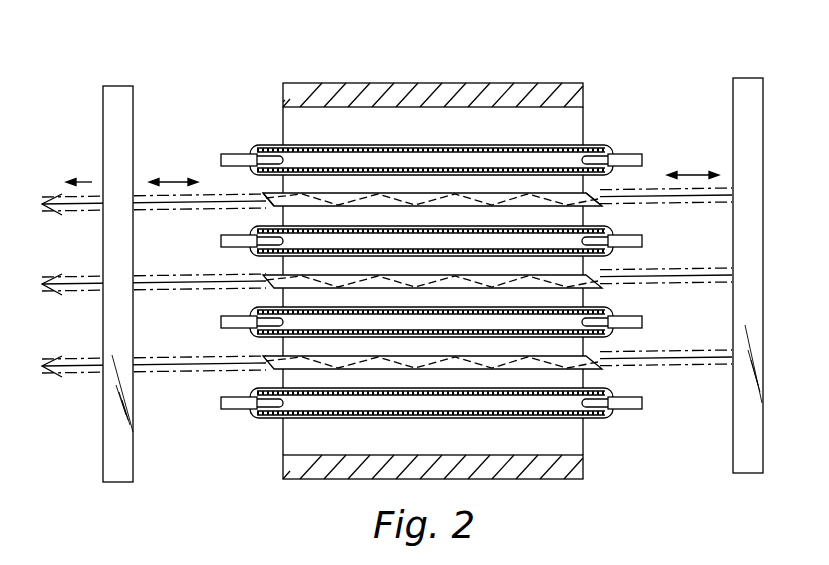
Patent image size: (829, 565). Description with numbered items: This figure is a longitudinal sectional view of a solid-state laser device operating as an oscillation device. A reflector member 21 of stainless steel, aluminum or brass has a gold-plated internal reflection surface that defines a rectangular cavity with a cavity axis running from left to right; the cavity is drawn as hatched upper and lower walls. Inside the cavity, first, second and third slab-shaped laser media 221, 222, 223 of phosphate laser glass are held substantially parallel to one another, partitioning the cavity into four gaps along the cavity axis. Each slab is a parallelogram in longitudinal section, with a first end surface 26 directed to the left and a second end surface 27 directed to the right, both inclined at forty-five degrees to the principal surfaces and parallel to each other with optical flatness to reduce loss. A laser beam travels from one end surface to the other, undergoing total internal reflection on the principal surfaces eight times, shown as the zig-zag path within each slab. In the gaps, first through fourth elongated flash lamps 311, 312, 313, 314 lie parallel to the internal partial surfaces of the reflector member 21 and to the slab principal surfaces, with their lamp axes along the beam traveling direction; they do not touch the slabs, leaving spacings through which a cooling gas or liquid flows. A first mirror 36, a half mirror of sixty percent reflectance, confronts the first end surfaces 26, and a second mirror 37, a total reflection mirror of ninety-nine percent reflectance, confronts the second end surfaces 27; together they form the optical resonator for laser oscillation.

The reflector member 21 is at (397, 83).
The first slab-shaped laser medium 221 is at (436, 193).
The second slab-shaped laser medium 222 is at (603, 277).
The third slab-shaped laser medium 223 is at (603, 358).
The first end surface 26 is at (265, 194).
The second end surface 27 is at (598, 198).
The first elongated flash lamp 311 is at (566, 146).
The second elongated flash lamp 312 is at (572, 229).
The third elongated flash lamp 313 is at (582, 308).
The fourth elongated flash lamp 314 is at (585, 390).
The first mirror 36 is at (117, 86).
The second mirror 37 is at (745, 78).